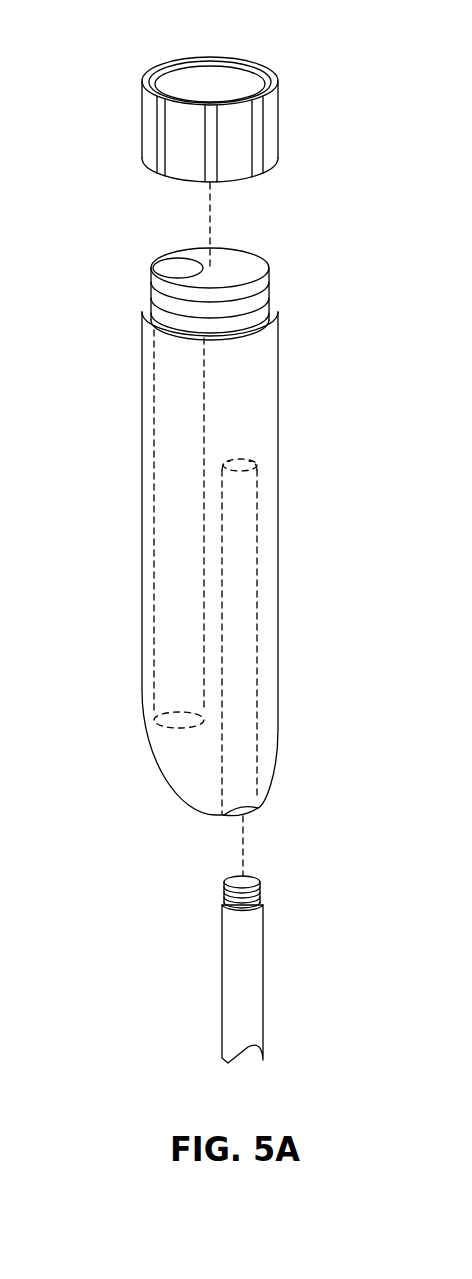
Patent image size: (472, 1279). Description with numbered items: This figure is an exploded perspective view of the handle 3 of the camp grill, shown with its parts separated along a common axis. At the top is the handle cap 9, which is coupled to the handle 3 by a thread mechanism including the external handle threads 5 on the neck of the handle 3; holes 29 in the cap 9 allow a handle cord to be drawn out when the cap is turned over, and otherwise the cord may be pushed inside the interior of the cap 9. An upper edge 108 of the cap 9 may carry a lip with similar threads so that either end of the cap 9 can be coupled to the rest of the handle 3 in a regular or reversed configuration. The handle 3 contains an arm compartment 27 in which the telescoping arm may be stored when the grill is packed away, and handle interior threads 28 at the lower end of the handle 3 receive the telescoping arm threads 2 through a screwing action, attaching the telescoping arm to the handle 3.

The telescoping arm threads 2 is at (262, 890).
The handle 3 is at (219, 514).
The external handle threads 5 is at (157, 322).
The handle cap 9 is at (197, 96).
The arm compartment 27 is at (172, 266).
The handle interior threads 28 is at (258, 730).
The holes 29 is at (208, 58).
The upper edge 108 is at (142, 94).